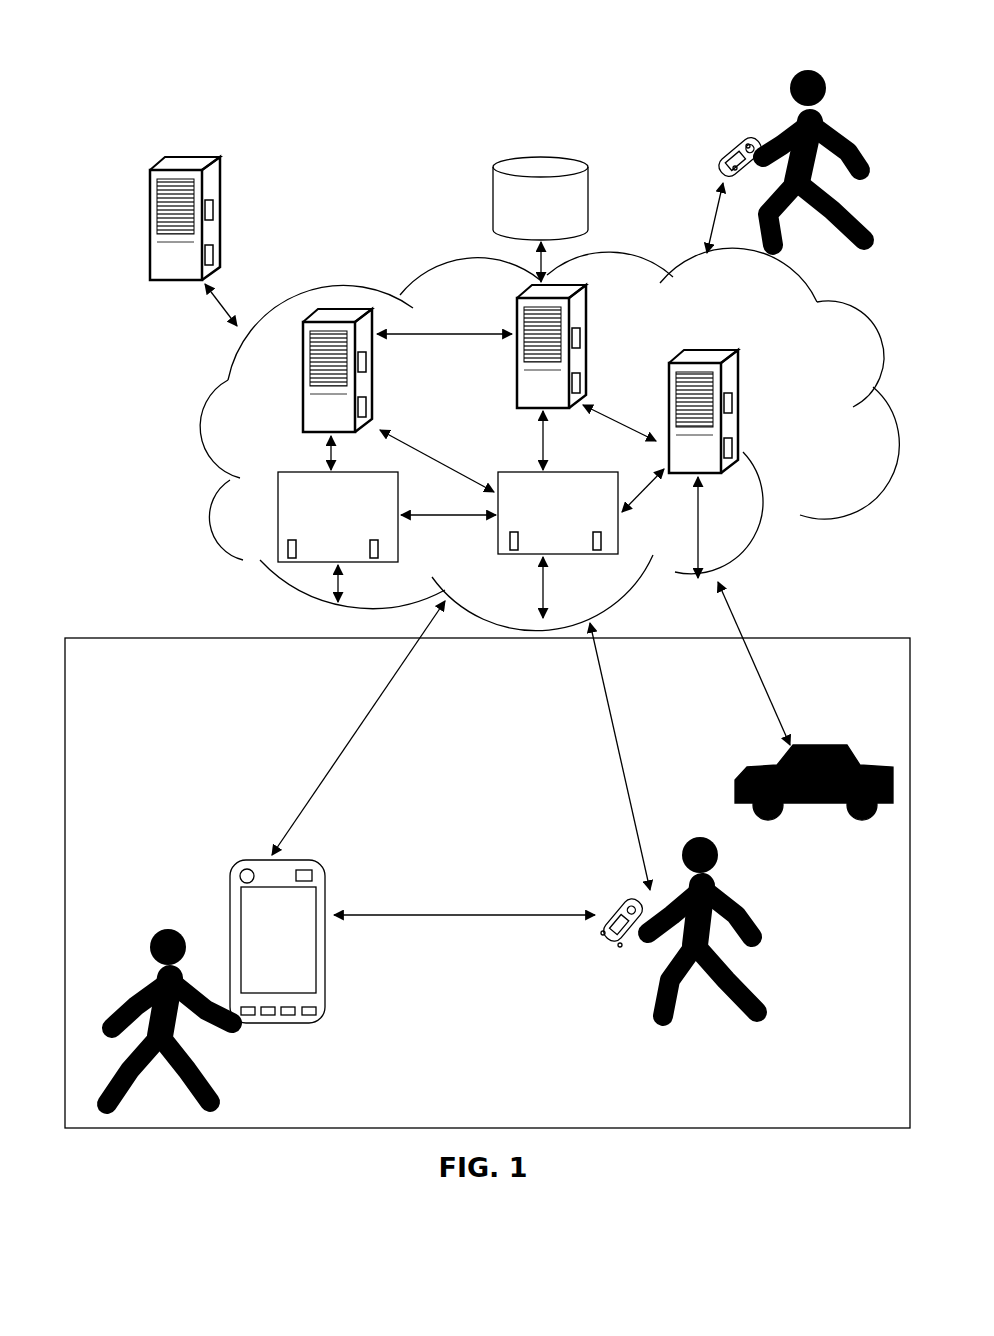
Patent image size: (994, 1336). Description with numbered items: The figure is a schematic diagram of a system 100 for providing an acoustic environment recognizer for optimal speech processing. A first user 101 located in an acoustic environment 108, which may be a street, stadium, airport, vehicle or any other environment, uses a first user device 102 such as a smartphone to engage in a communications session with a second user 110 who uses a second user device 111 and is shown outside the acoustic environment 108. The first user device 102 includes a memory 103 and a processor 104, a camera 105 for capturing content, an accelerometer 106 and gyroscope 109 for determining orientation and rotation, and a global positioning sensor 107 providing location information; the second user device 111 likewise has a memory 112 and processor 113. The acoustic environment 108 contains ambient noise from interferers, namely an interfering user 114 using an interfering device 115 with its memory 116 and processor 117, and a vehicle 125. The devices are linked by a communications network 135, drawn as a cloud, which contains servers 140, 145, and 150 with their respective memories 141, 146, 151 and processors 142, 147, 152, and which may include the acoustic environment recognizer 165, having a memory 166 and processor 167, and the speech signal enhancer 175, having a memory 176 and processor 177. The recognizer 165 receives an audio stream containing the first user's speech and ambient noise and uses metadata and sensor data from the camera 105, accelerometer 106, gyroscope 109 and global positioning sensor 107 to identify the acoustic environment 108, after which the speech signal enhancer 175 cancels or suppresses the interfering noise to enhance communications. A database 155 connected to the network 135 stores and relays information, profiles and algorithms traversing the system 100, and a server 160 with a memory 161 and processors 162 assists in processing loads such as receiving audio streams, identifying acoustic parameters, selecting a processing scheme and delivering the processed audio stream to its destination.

The system 100 is at (255, 128).
The first user 101 is at (118, 1108).
The first user device 102 is at (279, 987).
The memory 103 is at (247, 1017).
The processor 104 is at (308, 1017).
The camera 105 is at (240, 876).
The accelerometer 106 is at (268, 1017).
The global positioning sensor 107 is at (288, 1017).
The acoustic environment 108 is at (122, 638).
The gyroscope 109 is at (315, 866).
The second user 110 is at (870, 248).
The second user device 111 is at (709, 161).
The memory 112 is at (735, 170).
The processor 113 is at (742, 146).
The interferer 114 is at (758, 1018).
The interfering device 115 is at (579, 976).
The memory 116 is at (600, 934).
The processor 117 is at (620, 950).
The interferer 125 is at (880, 808).
The communications network 135 is at (173, 474).
The server 140 is at (539, 346).
The memory 141 is at (582, 340).
The processor 142 is at (582, 383).
The server 145 is at (343, 370).
The memory 146 is at (368, 365).
The processor 147 is at (370, 410).
The server 150 is at (758, 411).
The memory 151 is at (734, 405).
The processor 152 is at (734, 448).
The database 155 is at (540, 198).
The server 160 is at (185, 218).
The memory 161 is at (215, 253).
The processors 162 is at (215, 210).
The acoustic environment recognizer 165 is at (299, 545).
The memory 166 is at (290, 559).
The processor 167 is at (374, 559).
The speech signal enhancer 175 is at (521, 540).
The memory 176 is at (512, 551).
The processor 177 is at (597, 551).